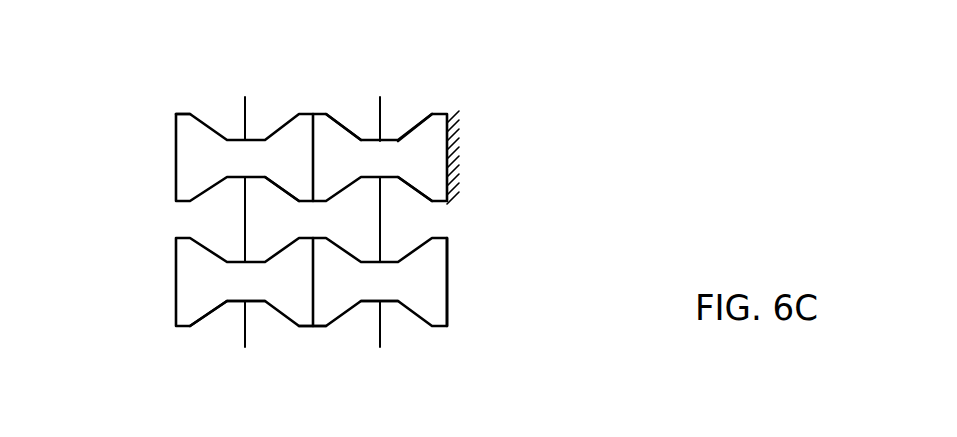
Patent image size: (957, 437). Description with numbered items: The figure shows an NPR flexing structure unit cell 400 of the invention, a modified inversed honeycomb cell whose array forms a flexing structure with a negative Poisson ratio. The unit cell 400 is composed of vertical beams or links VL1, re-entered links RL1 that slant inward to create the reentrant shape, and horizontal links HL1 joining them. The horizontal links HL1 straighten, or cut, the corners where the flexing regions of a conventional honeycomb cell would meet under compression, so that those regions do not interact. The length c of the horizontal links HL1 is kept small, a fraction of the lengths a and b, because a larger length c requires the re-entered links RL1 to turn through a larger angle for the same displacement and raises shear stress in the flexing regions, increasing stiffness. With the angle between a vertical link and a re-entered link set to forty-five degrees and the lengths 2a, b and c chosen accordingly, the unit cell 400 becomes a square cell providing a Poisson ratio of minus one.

The NPR flexing structure unit cell 400 is at (292, 97).
The vertical beams (links) VL1 is at (245, 221).
The horizontal links HL1 is at (253, 303).
The re-entered links RL1 is at (351, 203).
The length of the horizontal links c is at (230, 97).
The length b is at (447, 238).
The length 2a is at (233, 304).